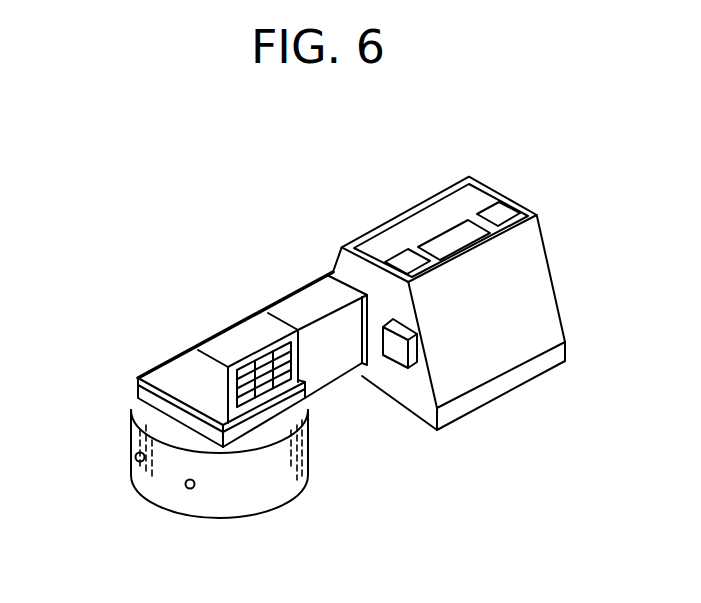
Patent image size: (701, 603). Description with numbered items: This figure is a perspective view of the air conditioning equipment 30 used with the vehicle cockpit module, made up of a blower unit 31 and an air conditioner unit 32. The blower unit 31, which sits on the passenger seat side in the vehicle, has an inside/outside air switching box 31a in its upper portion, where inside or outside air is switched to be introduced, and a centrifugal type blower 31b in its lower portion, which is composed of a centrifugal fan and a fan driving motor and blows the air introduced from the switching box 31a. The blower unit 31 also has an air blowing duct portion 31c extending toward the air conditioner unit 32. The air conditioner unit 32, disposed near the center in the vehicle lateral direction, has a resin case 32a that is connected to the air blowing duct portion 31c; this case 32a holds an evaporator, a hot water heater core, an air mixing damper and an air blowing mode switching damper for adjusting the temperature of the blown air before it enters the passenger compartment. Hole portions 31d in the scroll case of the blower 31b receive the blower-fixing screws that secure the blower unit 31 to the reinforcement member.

The sensor unit 30 is at (304, 272).
The blower unit 31 is at (192, 335).
The inside/outside air switching box 31a is at (182, 377).
The centrifugal type blower 31b is at (225, 473).
The air blowing duct portion 31c is at (293, 310).
The hole portions 31d is at (135, 457).
The air conditioner unit 32 is at (430, 192).
The resin case 32a is at (526, 283).